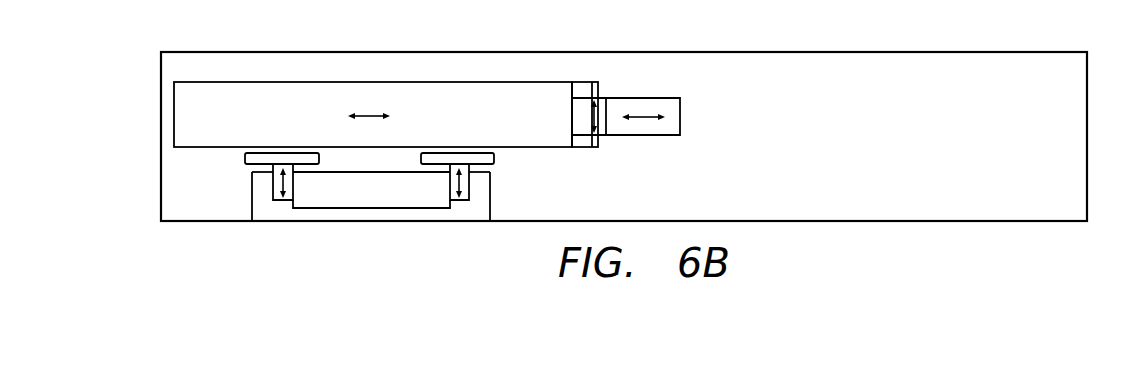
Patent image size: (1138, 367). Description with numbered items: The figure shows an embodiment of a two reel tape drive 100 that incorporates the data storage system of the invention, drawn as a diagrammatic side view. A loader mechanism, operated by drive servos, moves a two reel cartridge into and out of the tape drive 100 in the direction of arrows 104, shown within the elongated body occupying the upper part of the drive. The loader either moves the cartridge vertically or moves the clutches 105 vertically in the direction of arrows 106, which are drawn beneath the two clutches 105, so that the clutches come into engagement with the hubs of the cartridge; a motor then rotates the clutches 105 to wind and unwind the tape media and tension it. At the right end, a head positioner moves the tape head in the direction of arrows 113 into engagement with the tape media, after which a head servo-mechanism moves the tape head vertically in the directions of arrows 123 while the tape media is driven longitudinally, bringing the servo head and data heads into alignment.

The tape drive 100 is at (485, 51).
The arrows 104 is at (372, 114).
The clutches 105 is at (245, 158).
The arrows 106 is at (273, 183).
The arrows 113 is at (641, 119).
The arrows 123 is at (580, 113).